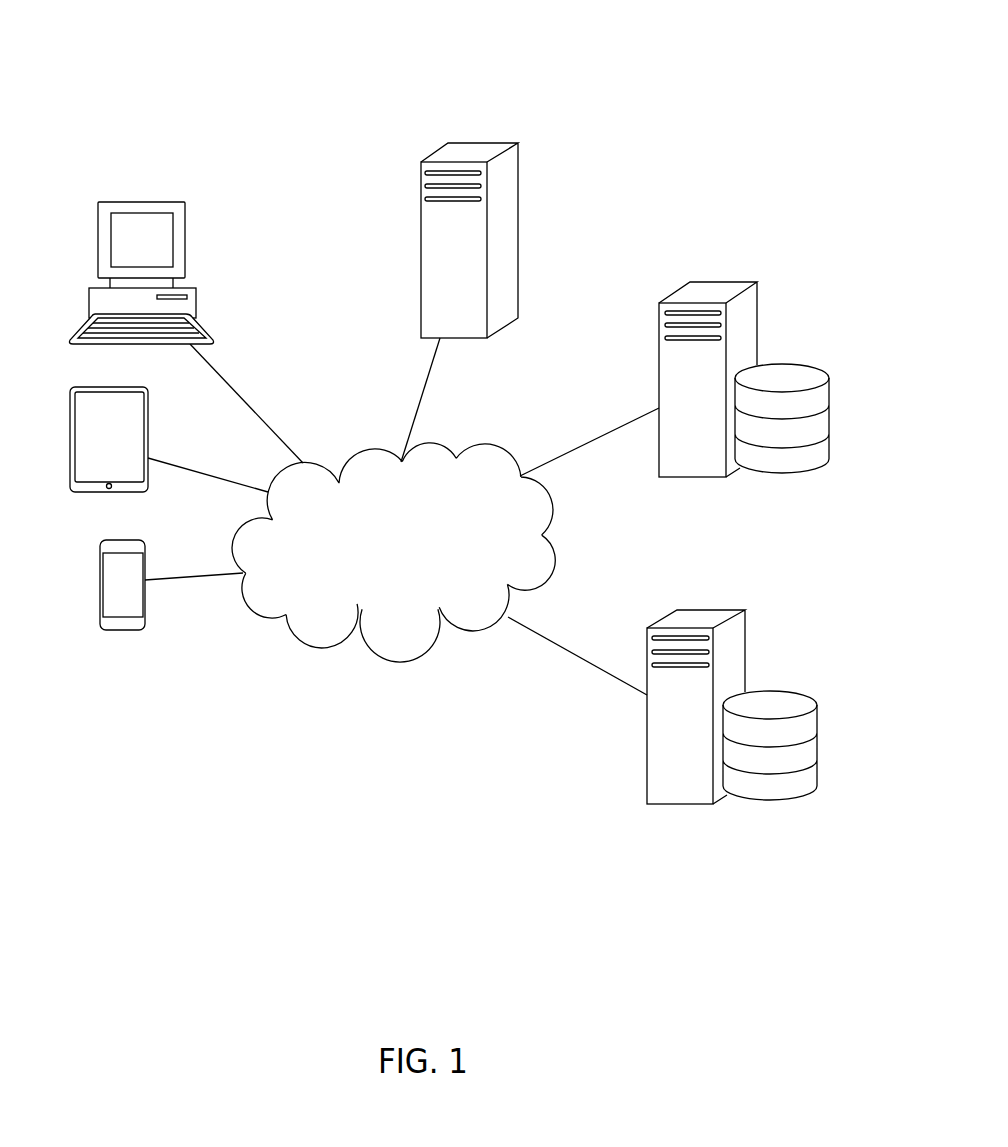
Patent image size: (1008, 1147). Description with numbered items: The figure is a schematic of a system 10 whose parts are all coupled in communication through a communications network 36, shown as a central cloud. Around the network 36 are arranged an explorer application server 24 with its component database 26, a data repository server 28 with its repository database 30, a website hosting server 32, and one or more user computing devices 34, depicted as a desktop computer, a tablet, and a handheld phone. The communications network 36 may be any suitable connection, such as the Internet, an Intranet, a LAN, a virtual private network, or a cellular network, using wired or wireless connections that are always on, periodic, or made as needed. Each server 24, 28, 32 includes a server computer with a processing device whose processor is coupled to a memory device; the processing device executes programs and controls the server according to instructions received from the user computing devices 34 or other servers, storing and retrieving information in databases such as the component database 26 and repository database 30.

The system 10 is at (592, 41).
The explorer application server 24 is at (768, 293).
The component database 26 is at (827, 357).
The data repository server 28 is at (757, 621).
The repository database 30 is at (815, 684).
The website hosting server 32 is at (537, 129).
The user computing devices 34 is at (108, 202).
The communications network 36 is at (381, 556).